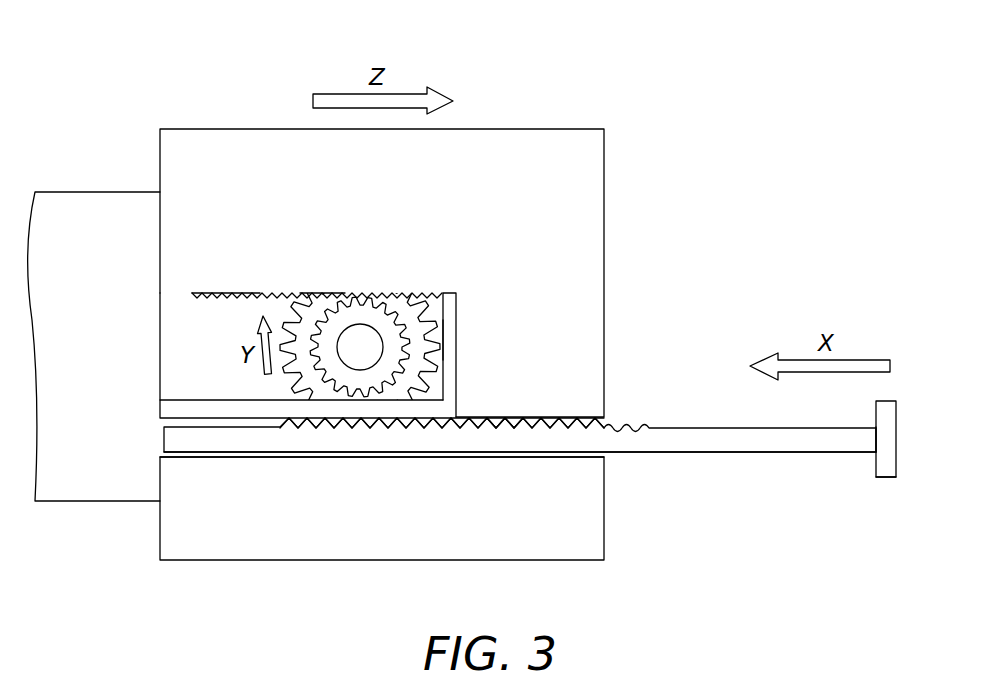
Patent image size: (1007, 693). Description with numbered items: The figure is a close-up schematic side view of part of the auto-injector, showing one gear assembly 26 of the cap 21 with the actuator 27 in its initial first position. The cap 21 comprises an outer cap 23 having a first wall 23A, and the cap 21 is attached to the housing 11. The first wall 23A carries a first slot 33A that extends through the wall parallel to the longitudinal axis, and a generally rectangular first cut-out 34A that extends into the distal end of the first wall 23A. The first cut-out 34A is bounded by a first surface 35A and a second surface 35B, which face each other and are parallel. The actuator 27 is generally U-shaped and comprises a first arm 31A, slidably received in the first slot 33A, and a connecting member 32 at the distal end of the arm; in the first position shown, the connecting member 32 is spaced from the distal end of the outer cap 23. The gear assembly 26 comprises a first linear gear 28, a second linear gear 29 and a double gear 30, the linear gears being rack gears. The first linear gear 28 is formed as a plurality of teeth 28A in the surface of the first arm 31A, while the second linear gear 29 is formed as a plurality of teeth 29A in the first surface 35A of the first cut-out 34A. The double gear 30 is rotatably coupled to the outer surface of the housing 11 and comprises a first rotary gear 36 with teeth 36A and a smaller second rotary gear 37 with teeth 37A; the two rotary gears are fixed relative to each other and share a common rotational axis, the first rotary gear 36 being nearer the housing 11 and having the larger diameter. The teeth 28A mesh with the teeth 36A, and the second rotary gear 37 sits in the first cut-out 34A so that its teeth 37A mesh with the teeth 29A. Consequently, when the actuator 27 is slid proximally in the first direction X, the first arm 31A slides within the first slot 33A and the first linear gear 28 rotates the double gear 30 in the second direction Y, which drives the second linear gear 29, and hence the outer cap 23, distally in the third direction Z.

The cap 21 is at (190, 88).
The first wall 23A is at (594, 178).
The housing 11 is at (108, 492).
The first cut-out 34A is at (160, 362).
The first surface 35A is at (167, 294).
The teeth 29A is at (233, 298).
The second linear gear 29 is at (258, 292).
The second rotary gear 37 is at (397, 295).
The teeth 37A is at (323, 294).
The double gear 30 is at (363, 295).
The first rotary gear 36 is at (413, 318).
The teeth 36A is at (433, 332).
The second surface 35B is at (226, 400).
The first arm 31A is at (806, 453).
The first linear gear 28 is at (553, 416).
The teeth 28A is at (520, 416).
The first slot 33A is at (565, 454).
The connecting member 32 is at (888, 438).
The actuator 27 is at (897, 478).
The outer cap 23 is at (258, 562).
The gear assembly 26 is at (384, 546).